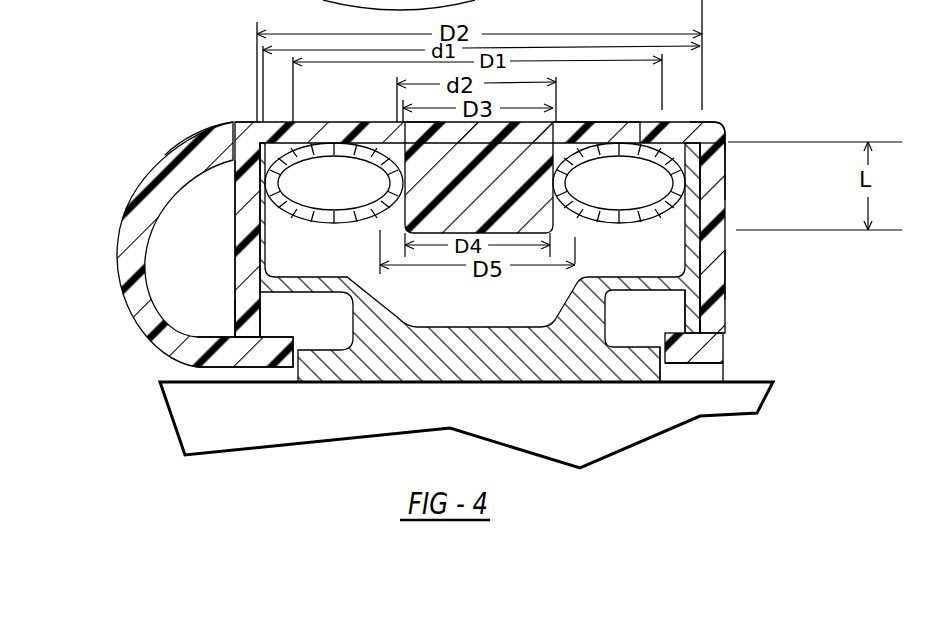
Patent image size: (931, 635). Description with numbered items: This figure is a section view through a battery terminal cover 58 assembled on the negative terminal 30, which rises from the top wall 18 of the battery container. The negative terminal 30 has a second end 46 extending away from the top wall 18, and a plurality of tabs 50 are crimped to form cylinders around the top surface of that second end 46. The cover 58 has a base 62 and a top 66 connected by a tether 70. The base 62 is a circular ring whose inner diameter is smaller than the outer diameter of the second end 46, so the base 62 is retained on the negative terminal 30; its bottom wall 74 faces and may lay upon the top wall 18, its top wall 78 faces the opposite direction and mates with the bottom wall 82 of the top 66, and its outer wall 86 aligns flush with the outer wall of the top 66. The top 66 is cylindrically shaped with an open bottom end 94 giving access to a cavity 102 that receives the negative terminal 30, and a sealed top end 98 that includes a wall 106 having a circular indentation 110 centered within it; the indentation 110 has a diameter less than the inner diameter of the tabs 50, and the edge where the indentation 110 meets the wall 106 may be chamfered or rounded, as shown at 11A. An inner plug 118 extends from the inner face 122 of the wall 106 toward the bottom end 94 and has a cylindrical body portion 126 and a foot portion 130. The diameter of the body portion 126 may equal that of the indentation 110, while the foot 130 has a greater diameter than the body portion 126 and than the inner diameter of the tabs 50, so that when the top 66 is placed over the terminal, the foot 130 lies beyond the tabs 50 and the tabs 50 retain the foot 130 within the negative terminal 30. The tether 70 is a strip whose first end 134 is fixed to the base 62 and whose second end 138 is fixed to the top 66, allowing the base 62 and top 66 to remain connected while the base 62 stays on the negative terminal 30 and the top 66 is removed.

The sealing region 11A is at (572, 117).
The top wall 18 is at (160, 383).
The negative terminal 30 is at (641, 364).
The second end 46 is at (690, 141).
The tabs 50 is at (728, 172).
The cover 58 is at (717, 121).
The base 62 is at (725, 342).
The top 66 is at (718, 274).
The tether 70 is at (125, 233).
The bottom wall 74 is at (700, 368).
The top wall 78 is at (683, 325).
The bottom wall 82 is at (695, 338).
The outer wall 86 is at (727, 353).
The open bottom end 94 is at (250, 325).
The sealed top end 98 is at (258, 121).
The cavity 102 is at (728, 154).
The wall 106 is at (610, 127).
The indentation 110 is at (425, 125).
The inner plug 118 is at (350, 127).
The inner face 122 is at (233, 153).
The cylindrical body portion 126 is at (559, 187).
The foot portion 130 is at (388, 225).
The first end 134 is at (197, 369).
The second end 138 is at (258, 121).